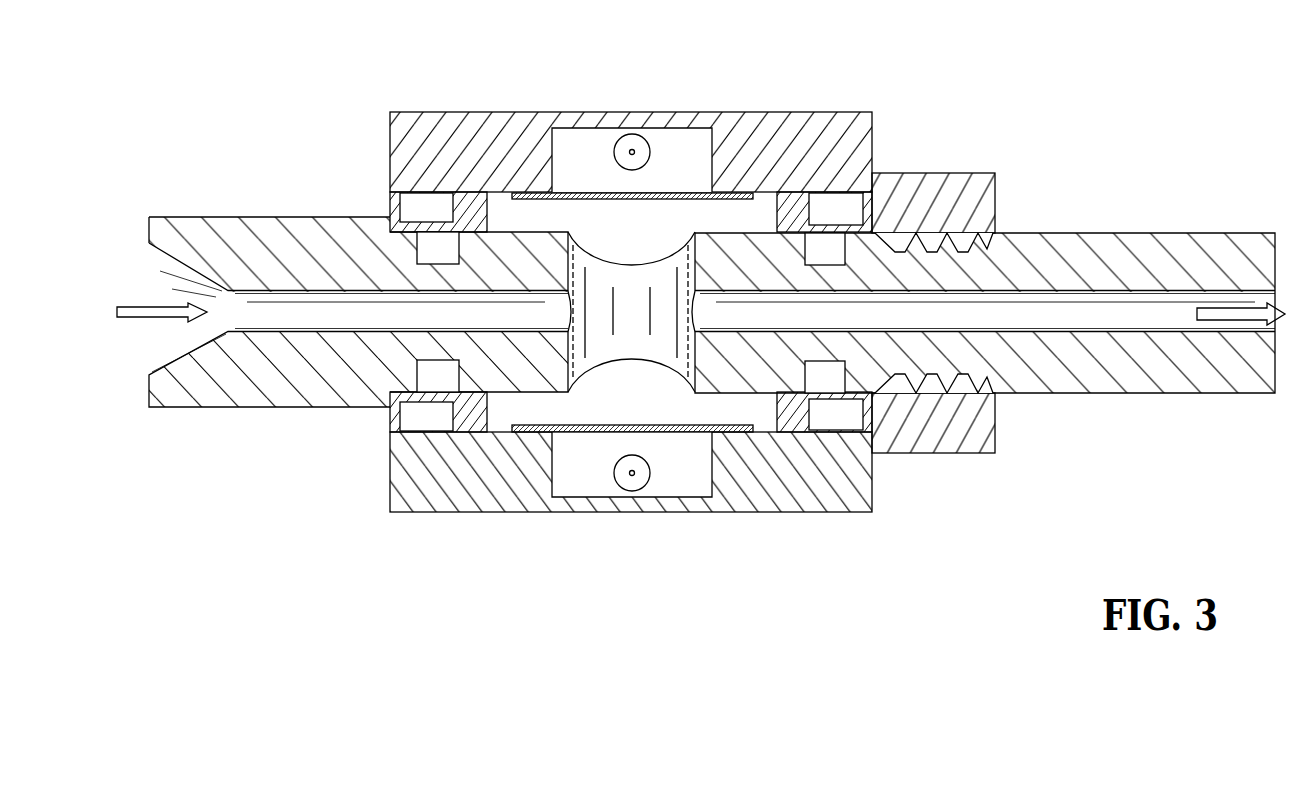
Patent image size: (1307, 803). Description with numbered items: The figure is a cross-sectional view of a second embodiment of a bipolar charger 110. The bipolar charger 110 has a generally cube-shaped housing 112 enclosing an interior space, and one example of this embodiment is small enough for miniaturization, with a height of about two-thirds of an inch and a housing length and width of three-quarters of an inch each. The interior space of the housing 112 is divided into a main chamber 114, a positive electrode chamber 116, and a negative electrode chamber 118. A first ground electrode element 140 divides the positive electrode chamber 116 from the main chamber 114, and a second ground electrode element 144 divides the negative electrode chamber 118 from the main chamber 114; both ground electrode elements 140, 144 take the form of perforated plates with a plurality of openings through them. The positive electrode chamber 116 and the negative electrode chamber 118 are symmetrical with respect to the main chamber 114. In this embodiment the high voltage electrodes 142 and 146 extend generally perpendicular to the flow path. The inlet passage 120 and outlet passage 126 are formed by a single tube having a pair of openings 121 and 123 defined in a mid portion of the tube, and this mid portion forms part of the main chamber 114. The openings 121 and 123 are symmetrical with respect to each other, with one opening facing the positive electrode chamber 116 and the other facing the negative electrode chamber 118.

The bipolar charger 110 is at (701, 299).
The housing 112 is at (500, 123).
The main chamber 114 is at (674, 411).
The positive electrode chamber 116 is at (597, 165).
The negative electrode chamber 118 is at (595, 476).
The inlet passage 120 is at (305, 228).
The opening 121 is at (633, 258).
The opening 123 is at (630, 362).
The outlet passage 126 is at (792, 247).
The first ground electrode element 140 is at (683, 196).
The high voltage electrode 142 is at (632, 152).
The second ground electrode element 144 is at (685, 425).
The high voltage electrode 146 is at (632, 473).